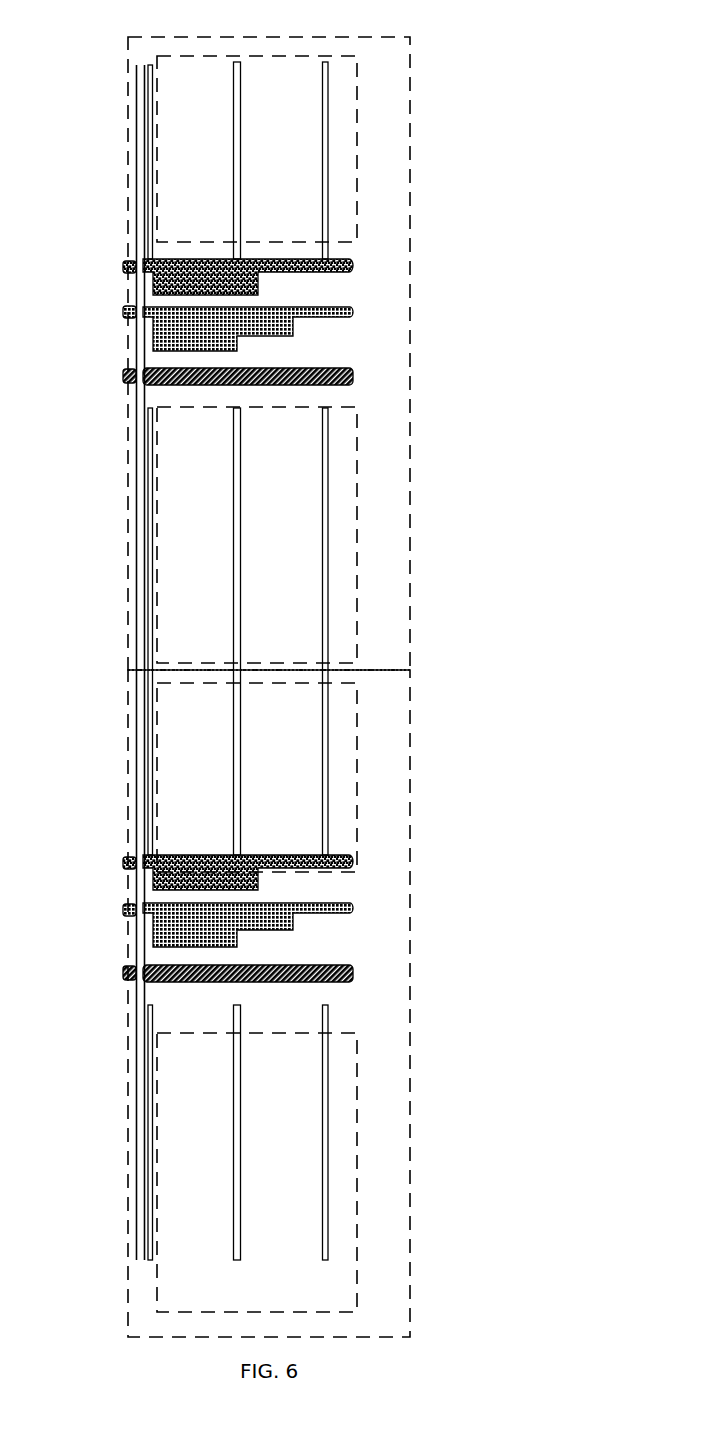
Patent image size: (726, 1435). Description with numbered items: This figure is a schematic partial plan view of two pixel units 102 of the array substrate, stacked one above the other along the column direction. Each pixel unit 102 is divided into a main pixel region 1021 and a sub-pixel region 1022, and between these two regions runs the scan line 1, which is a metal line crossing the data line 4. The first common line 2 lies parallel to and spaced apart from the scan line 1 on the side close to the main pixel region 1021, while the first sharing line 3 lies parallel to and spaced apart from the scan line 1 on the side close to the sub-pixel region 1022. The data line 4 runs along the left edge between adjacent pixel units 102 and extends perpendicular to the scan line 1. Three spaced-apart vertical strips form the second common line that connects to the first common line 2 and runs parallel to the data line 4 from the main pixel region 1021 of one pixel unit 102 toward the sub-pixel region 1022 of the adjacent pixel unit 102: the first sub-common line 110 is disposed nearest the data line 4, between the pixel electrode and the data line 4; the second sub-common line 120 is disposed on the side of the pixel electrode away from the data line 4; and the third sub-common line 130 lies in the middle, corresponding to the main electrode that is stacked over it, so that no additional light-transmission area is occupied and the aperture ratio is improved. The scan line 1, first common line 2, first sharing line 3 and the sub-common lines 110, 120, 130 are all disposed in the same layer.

The scan line 1 is at (213, 605).
The first common line 2 is at (210, 554).
The first sharing line 3 is at (210, 656).
The data line 4 is at (105, 662).
The pixel unit 102 is at (317, 687).
The main pixel region 1021 is at (325, 462).
The sub-pixel region 1022 is at (325, 859).
The first sub-common line 110 is at (132, 633).
The second sub-common line 120 is at (397, 633).
The third sub-common line 130 is at (270, 636).